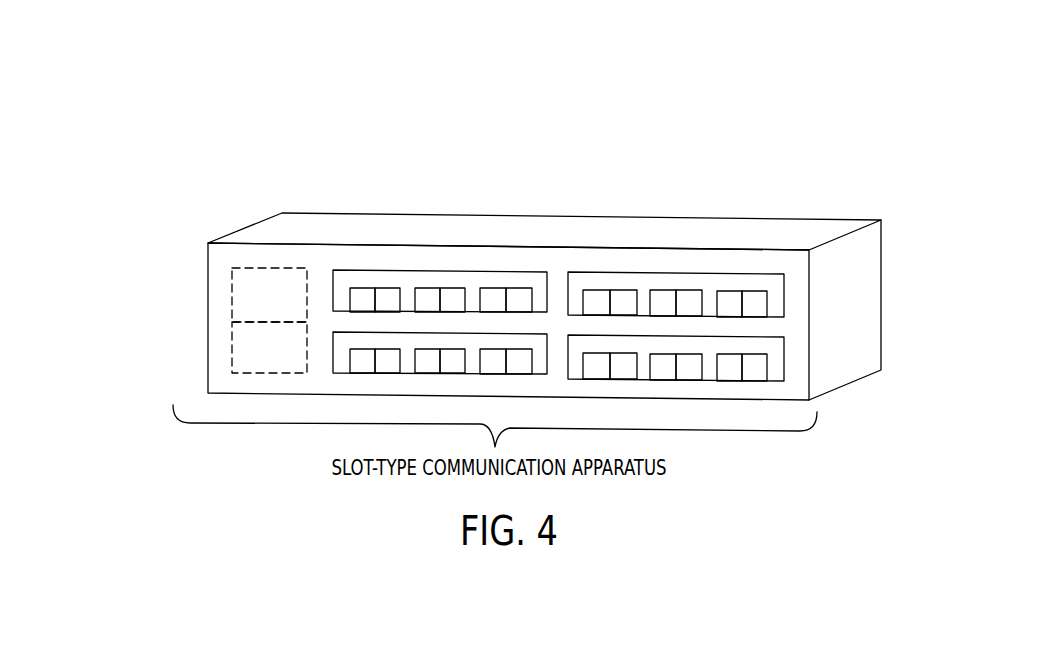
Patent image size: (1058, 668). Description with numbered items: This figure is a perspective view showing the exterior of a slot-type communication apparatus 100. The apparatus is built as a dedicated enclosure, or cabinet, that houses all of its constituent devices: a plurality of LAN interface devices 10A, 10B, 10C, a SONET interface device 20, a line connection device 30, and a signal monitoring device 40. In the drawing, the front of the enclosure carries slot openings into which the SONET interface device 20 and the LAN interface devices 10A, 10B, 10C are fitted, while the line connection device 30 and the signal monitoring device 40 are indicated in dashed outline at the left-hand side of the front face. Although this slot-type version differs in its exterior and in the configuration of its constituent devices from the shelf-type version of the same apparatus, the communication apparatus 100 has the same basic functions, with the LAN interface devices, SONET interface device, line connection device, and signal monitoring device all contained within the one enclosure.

The communication apparatus 100 is at (781, 78).
The SONET interface device 20 is at (405, 278).
The LAN interface device 10A is at (473, 343).
The LAN interface device 10B is at (618, 278).
The LAN interface device 10C is at (708, 347).
The signal monitoring device 40 is at (242, 300).
The line connection device 30 is at (242, 335).